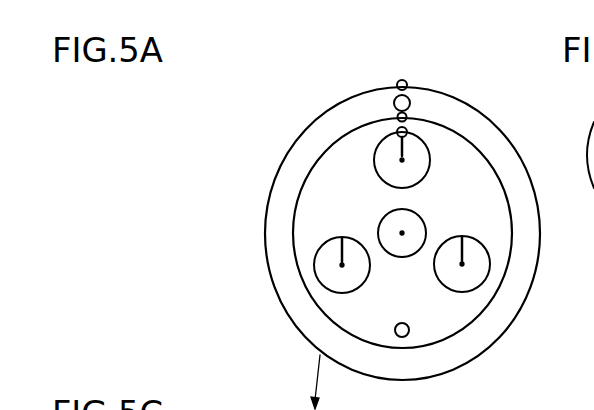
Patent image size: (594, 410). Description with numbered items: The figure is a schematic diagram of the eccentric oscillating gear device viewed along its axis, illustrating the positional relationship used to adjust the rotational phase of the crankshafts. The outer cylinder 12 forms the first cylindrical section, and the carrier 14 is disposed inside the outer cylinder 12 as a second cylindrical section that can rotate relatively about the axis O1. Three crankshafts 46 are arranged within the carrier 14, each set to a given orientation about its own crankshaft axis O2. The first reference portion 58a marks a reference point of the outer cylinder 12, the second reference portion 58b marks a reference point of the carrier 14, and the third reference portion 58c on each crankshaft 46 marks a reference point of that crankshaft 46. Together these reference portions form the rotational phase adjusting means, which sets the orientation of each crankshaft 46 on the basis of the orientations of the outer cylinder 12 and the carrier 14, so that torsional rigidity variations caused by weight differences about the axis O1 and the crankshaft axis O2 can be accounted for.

The outer cylinder 12 is at (291, 148).
The carrier 14 is at (299, 197).
The crankshaft 46 is at (420, 136).
The first reference portion 58a is at (410, 100).
The second reference portion 58b is at (408, 334).
The third reference portion 58c is at (398, 130).
The axis O1 is at (402, 233).
The crankshaft axis O2 is at (402, 160).